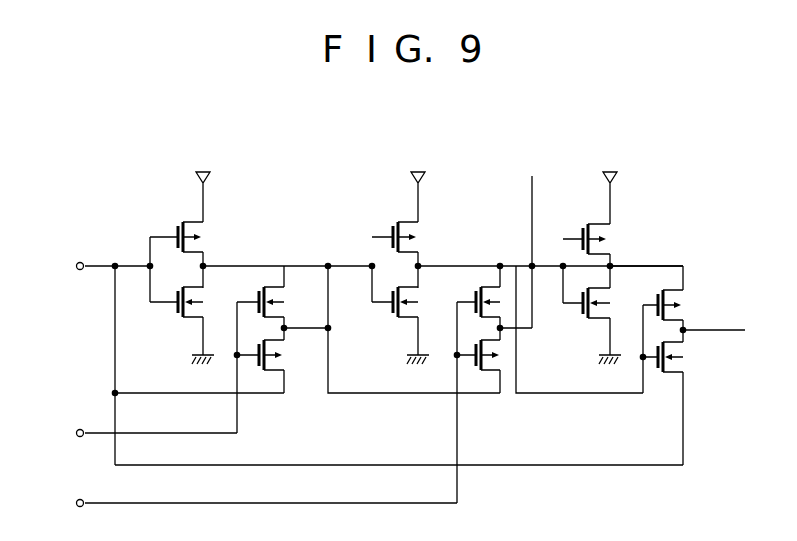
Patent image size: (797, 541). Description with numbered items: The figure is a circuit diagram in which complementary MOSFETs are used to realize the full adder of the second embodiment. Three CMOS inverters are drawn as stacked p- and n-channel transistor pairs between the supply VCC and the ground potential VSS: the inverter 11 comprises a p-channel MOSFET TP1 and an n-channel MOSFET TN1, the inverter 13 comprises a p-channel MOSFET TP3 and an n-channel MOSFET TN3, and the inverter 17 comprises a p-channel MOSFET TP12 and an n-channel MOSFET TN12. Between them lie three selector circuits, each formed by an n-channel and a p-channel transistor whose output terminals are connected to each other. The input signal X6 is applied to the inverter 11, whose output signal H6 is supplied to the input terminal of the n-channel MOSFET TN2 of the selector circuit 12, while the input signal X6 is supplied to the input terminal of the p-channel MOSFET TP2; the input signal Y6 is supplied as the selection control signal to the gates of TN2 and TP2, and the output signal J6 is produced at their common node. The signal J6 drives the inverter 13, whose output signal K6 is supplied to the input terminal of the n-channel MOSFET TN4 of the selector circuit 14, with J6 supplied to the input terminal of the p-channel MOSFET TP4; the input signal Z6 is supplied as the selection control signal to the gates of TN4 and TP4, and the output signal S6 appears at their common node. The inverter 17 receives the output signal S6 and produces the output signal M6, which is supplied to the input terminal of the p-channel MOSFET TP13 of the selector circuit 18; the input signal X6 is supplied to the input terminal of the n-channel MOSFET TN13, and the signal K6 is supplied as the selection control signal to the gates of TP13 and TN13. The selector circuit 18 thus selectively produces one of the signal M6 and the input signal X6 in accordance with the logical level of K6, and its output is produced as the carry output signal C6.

The inverter 11 is at (195, 280).
The selector circuit 12 is at (282, 338).
The inverter 13 is at (410, 281).
The selector circuit 14 is at (486, 373).
The inverter 17 is at (608, 282).
The selector circuit 18 is at (700, 365).
The p-channel MOSFET TP1 is at (207, 229).
The n-channel MOSFET TN1 is at (166, 310).
The n-channel MOSFET TN2 is at (292, 294).
The p-channel MOSFET TP2 is at (291, 362).
The p-channel MOSFET TP3 is at (423, 231).
The n-channel MOSFET TN3 is at (384, 317).
The n-channel MOSFET TN4 is at (508, 296).
The p-channel MOSFET TP4 is at (480, 377).
The p-channel MOSFET TP12 is at (616, 233).
The n-channel MOSFET TN12 is at (582, 321).
The p-channel MOSFET TP13 is at (687, 301).
The n-channel MOSFET TN13 is at (687, 359).
The input signal X6 is at (100, 359).
The input signal Y6 is at (141, 433).
The input signal Z6 is at (251, 503).
The output signal S6 is at (523, 240).
The carry output signal C6 is at (727, 330).
The output signal H6 is at (350, 319).
The output signal J6 is at (306, 318).
The signal K6 is at (549, 319).
The output signal M6 is at (646, 258).
The power supply voltage VCC is at (412, 187).
The ground potential VSS is at (406, 352).